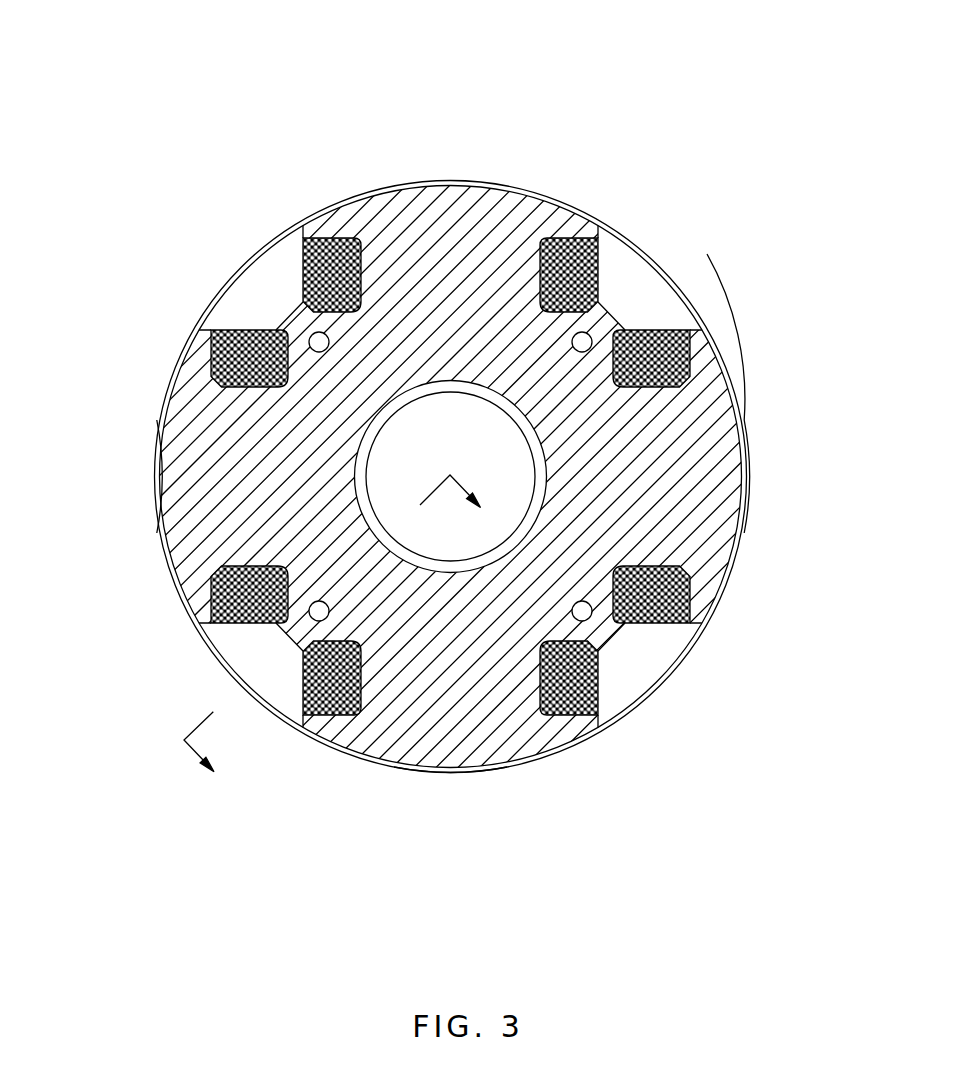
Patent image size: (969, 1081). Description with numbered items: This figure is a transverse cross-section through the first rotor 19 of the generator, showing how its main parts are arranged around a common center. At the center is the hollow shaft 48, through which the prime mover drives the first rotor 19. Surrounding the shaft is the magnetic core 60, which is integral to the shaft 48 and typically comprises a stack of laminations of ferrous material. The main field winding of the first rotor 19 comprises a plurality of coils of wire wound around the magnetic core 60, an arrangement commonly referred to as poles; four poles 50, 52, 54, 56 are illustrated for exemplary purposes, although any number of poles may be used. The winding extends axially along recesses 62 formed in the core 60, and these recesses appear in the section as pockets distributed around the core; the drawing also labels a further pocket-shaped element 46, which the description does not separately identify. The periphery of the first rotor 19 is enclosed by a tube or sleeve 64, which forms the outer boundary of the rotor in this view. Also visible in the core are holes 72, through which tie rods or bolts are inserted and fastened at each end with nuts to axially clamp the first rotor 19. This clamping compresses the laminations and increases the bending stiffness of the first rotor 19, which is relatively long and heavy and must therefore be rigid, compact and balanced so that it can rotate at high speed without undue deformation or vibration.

The first rotor 19 is at (539, 113).
The permanent magnet (tangential) 46 is at (672, 330).
The hollow shaft 48 is at (443, 380).
The pole 50 is at (437, 178).
The pole 52 is at (762, 460).
The pole 54 is at (455, 785).
The pole 56 is at (150, 415).
The magnetic core 60 is at (707, 533).
The recess 62 is at (562, 238).
The tube or sleeve 64 is at (740, 400).
The hole 72 is at (590, 333).